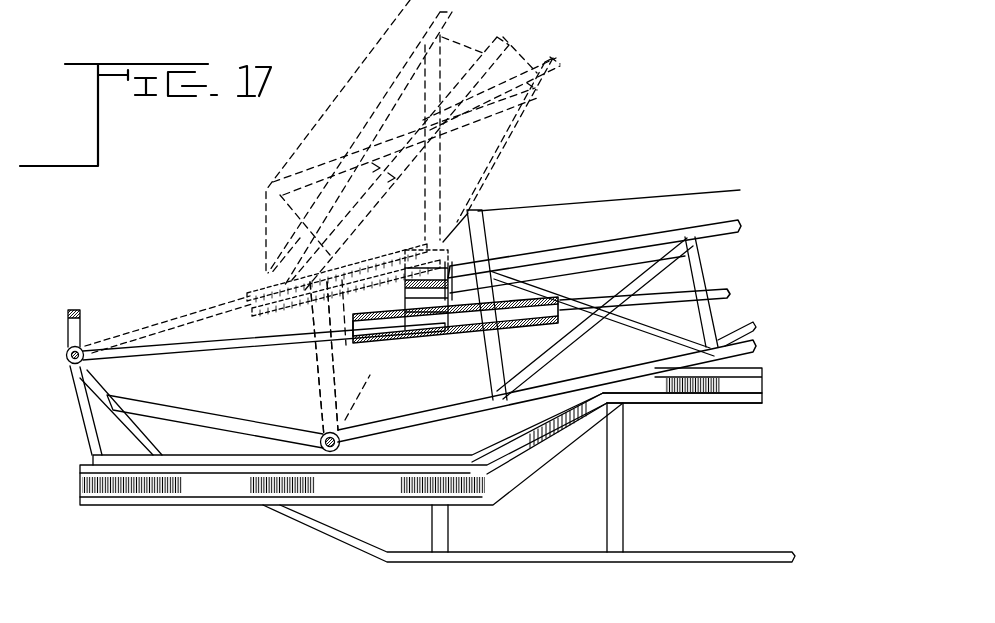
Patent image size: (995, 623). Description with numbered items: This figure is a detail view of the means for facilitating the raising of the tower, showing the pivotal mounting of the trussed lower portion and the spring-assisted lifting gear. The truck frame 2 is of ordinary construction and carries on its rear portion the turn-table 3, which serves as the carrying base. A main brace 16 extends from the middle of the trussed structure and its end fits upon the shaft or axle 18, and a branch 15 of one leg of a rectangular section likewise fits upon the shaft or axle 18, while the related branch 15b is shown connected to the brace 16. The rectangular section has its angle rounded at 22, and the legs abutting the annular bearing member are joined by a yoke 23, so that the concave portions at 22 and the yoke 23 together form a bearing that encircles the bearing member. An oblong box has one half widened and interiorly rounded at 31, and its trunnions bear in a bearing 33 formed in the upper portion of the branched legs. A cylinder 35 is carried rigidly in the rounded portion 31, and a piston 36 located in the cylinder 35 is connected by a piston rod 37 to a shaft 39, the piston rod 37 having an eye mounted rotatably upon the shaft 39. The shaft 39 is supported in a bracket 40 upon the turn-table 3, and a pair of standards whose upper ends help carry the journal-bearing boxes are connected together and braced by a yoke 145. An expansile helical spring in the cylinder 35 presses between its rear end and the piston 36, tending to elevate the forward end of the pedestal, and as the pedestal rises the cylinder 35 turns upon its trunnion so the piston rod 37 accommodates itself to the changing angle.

The truck frame 2 is at (687, 393).
The turn-table 3 is at (182, 460).
The branch 15 is at (317, 365).
The link arm 15b is at (360, 341).
The main brace 16 is at (527, 115).
The shaft or axle 18 is at (320, 436).
The rounded angle 22 is at (405, 241).
The yoke 23 is at (490, 253).
The interiorly rounded portion 31 is at (436, 340).
The bearing 33 is at (530, 277).
The cylinder 35 is at (262, 288).
The piston 36 is at (363, 303).
The piston rod 37 is at (145, 348).
The shaft 39 is at (67, 349).
The bracket 40 is at (87, 413).
The yoke 145 is at (77, 309).